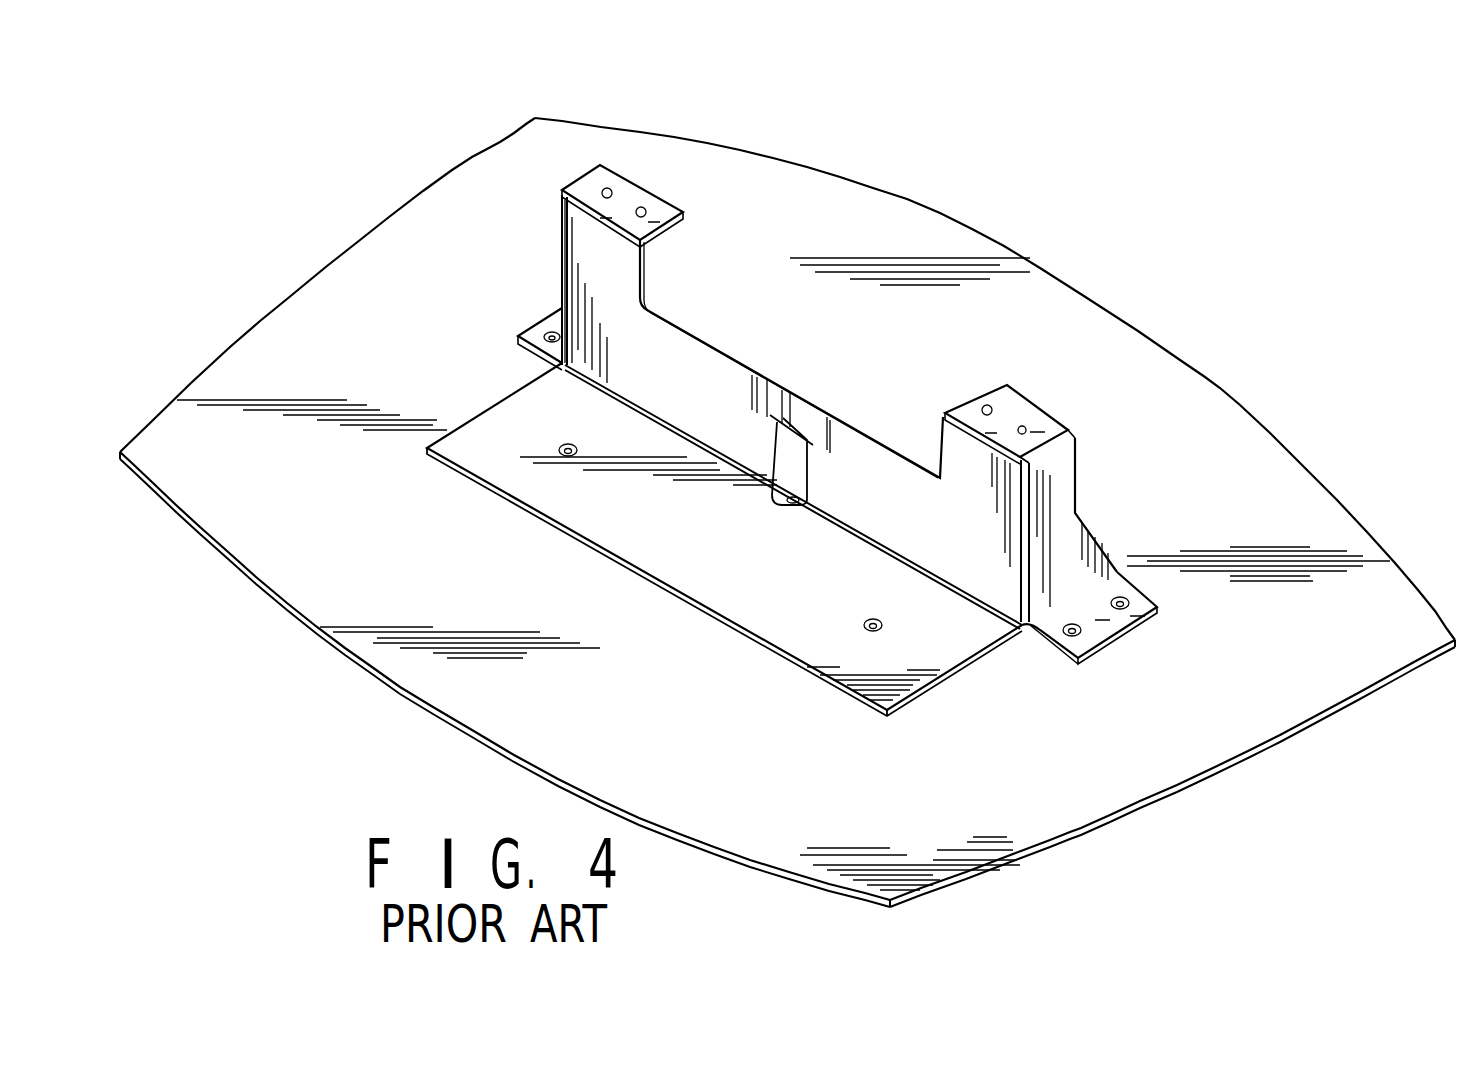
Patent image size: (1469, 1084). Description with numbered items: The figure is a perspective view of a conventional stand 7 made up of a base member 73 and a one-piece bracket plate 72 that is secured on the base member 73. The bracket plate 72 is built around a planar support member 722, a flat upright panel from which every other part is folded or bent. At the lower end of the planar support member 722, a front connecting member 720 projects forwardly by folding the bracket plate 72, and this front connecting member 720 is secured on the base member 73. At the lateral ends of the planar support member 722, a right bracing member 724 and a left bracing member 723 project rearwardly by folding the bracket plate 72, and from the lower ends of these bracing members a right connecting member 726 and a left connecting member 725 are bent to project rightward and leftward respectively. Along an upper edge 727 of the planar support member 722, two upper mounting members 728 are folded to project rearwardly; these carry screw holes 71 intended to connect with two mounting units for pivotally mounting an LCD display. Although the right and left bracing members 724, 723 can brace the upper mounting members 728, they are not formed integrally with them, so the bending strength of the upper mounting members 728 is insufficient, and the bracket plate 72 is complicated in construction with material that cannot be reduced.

The stand 7 is at (1287, 385).
The screw holes 71 is at (1022, 425).
The bracket plate 72 is at (806, 395).
The base member 73 is at (1200, 388).
The front connecting member 720 is at (716, 606).
The planar support member 722 is at (878, 455).
The left bracing member 723 is at (583, 178).
The right bracing member 724 is at (1052, 513).
The left connecting member 725 is at (546, 333).
The right connecting member 726 is at (1100, 627).
The upper edge 727 is at (596, 233).
The upper mounting members 728 is at (668, 235).